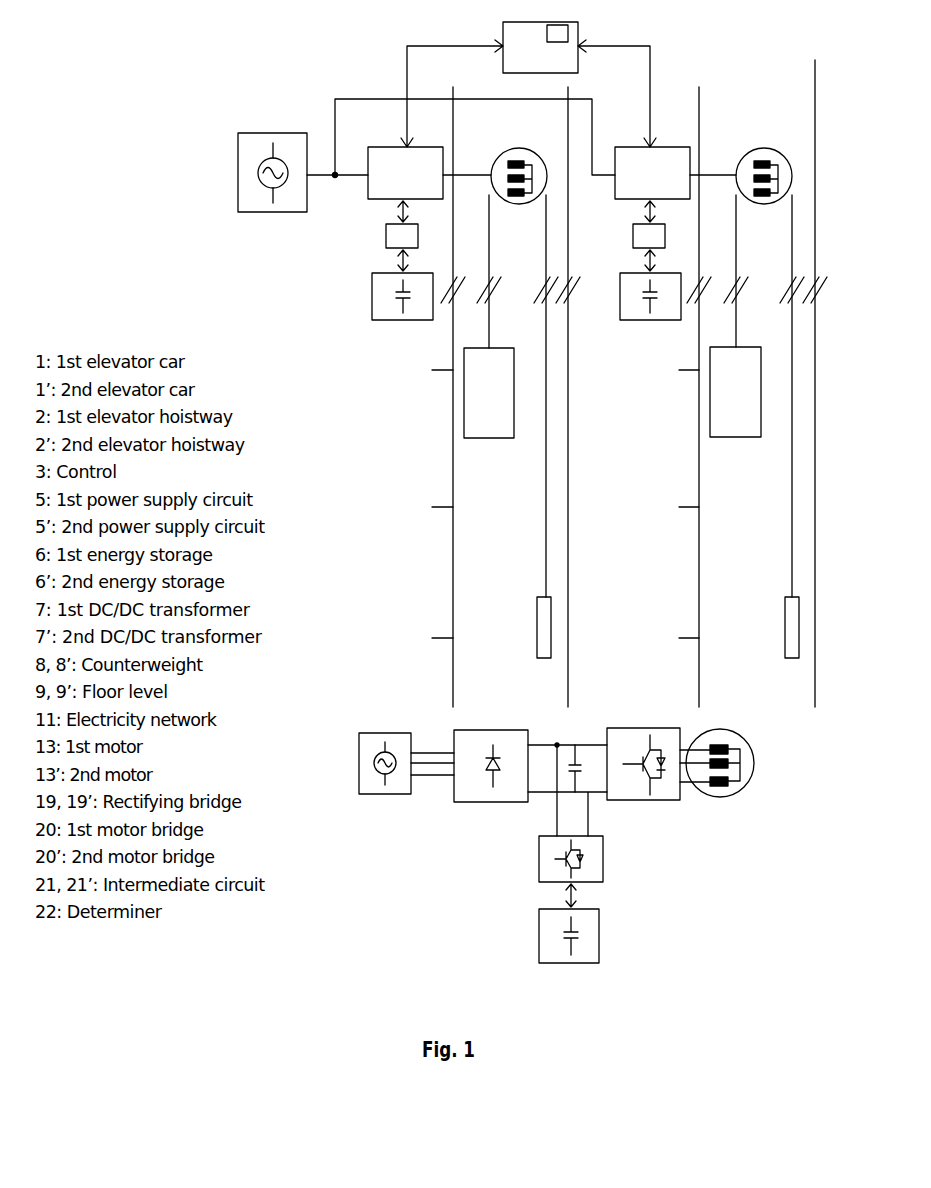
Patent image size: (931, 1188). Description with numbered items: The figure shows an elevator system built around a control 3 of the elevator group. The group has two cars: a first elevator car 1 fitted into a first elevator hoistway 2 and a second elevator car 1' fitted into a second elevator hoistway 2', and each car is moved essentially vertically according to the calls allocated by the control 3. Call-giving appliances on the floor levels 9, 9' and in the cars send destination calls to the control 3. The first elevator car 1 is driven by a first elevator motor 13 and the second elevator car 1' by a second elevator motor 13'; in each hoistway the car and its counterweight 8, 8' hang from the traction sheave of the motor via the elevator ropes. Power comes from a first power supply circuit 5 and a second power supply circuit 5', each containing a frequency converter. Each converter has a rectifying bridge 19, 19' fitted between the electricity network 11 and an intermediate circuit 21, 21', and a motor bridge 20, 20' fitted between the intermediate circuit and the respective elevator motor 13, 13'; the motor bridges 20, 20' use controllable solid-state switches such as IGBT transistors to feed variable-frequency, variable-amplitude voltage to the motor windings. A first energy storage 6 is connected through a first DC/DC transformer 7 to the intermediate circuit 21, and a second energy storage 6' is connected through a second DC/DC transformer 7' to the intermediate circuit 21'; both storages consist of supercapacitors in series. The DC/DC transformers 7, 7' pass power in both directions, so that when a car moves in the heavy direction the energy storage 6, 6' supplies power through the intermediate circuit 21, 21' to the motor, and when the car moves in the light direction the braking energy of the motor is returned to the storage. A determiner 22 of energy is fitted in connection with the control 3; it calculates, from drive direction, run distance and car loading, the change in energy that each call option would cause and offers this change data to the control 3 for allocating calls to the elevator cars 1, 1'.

The first elevator car 1 is at (492, 420).
The second elevator car 1' is at (742, 419).
The first elevator hoistway 2 is at (461, 397).
The second elevator hoistway 2' is at (720, 383).
The control of the elevator group 3 is at (538, 42).
The first power supply circuit 5 is at (383, 190).
The second power supply circuit 5' is at (633, 186).
The first energy storage 6 is at (499, 618).
The second energy storage 6' is at (566, 618).
The first DC/DC transformer 7 is at (498, 556).
The second DC/DC transformer 7' is at (558, 556).
The counterweight 8 is at (519, 627).
The counterweight 8' is at (766, 627).
The floor level 9 is at (418, 504).
The floor level 9' is at (662, 504).
The electricity network 11 is at (260, 133).
The first elevator motor 13 is at (677, 439).
The second elevator motor 13' is at (783, 439).
The rectifying bridge 19 is at (457, 795).
The rectifying bridge 19' is at (491, 766).
The first motor bridge 20 is at (683, 791).
The second motor bridge 20' is at (643, 764).
The intermediate circuit 21 is at (593, 762).
The intermediate circuit 21' is at (567, 789).
The determiner of energy 22 is at (566, 33).